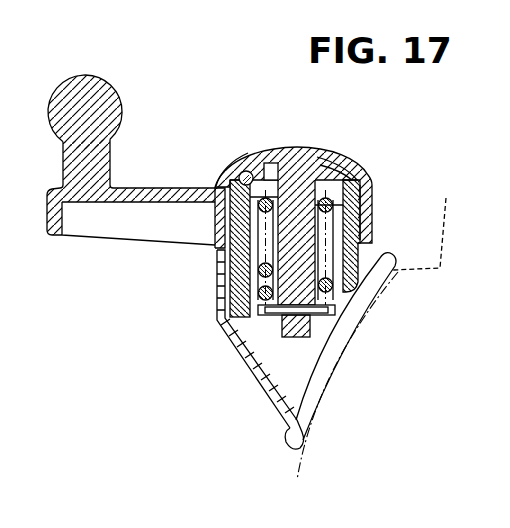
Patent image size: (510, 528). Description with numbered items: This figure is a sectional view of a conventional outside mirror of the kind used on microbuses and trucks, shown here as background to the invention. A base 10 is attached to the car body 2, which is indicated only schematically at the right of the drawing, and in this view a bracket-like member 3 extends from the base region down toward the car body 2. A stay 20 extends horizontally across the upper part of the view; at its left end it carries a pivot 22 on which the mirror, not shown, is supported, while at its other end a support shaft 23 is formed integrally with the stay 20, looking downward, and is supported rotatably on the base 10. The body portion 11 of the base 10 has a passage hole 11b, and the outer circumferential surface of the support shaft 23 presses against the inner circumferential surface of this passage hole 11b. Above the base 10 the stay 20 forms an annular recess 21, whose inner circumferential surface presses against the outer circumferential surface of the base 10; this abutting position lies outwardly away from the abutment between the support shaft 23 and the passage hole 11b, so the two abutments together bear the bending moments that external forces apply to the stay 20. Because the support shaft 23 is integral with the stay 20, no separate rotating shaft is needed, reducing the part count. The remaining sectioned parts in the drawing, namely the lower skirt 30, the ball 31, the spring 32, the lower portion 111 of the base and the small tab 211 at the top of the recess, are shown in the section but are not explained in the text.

The car body 2 is at (426, 276).
The bracket 3 is at (346, 315).
The base 10 is at (244, 366).
The body 11 is at (364, 184).
The passage hole 11b is at (334, 173).
The stay 20 is at (133, 230).
The annular recess 21 is at (352, 172).
The pivot 22 is at (107, 99).
The support shaft 23 is at (262, 310).
The cap skirt 30 is at (361, 201).
The ball 31 is at (243, 171).
The spring 32 is at (257, 273).
The body lower portion 111 is at (226, 179).
The tab 211 is at (251, 172).